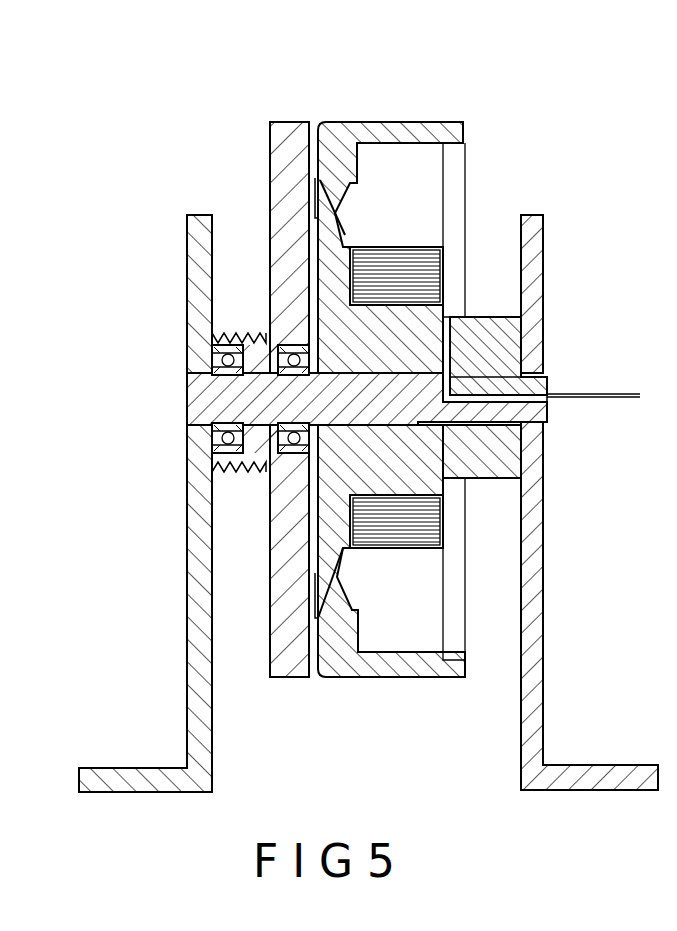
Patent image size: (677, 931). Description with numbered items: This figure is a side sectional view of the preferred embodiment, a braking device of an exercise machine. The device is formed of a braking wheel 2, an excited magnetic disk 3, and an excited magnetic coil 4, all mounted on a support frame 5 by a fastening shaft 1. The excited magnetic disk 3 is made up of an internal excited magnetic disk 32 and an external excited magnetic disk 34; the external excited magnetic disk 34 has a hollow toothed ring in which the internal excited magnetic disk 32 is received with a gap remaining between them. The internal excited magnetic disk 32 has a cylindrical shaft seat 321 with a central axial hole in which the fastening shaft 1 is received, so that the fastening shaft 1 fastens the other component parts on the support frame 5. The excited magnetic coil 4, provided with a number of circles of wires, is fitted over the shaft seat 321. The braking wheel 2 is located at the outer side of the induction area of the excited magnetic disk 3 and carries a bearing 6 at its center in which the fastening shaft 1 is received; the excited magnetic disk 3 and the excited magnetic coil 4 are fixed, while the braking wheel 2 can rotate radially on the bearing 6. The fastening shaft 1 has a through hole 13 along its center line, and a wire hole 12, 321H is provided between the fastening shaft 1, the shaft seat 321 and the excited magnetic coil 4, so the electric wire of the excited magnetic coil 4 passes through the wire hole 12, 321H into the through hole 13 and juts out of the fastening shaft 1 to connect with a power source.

The fastening shaft 1 is at (193, 398).
The braking wheel 2 is at (290, 123).
The excited magnetic disk 3 is at (391, 412).
The excited magnetic coil 4 is at (397, 538).
The support frame 5 is at (583, 595).
The bearing 6 is at (280, 343).
The wire hole 12 is at (543, 362).
The through hole 13 is at (547, 417).
The internal excited magnetic disk 32 is at (343, 235).
The external excited magnetic disk 34 is at (393, 125).
The shaft seat 321 is at (483, 473).
The wire hole 321H is at (445, 363).